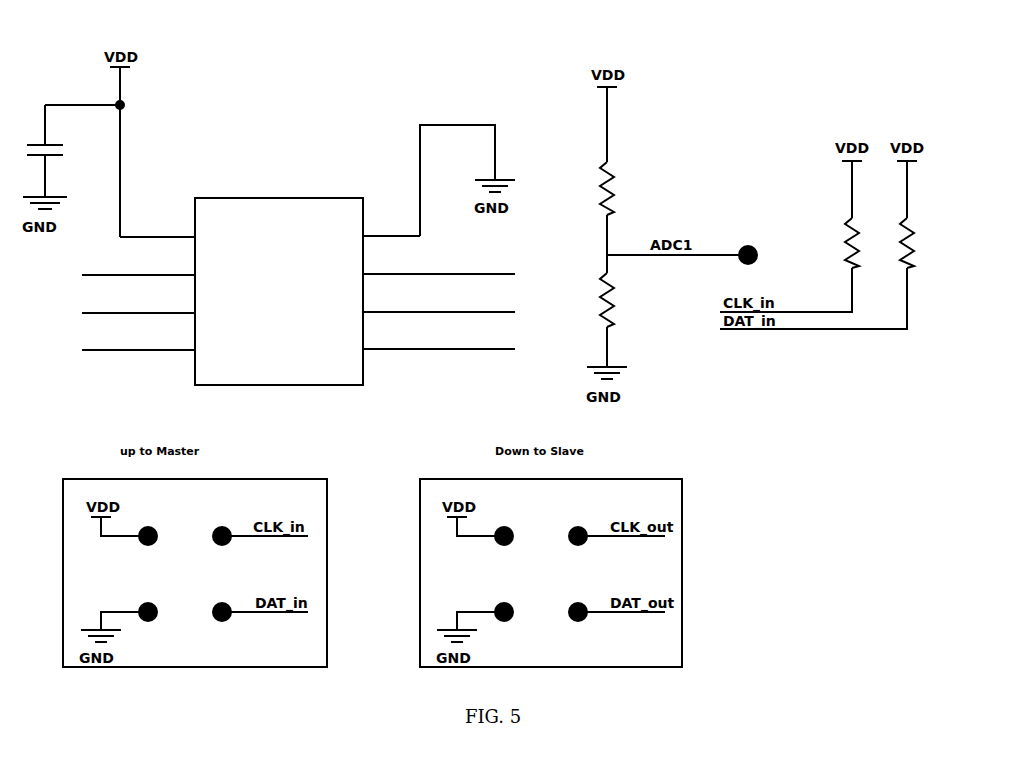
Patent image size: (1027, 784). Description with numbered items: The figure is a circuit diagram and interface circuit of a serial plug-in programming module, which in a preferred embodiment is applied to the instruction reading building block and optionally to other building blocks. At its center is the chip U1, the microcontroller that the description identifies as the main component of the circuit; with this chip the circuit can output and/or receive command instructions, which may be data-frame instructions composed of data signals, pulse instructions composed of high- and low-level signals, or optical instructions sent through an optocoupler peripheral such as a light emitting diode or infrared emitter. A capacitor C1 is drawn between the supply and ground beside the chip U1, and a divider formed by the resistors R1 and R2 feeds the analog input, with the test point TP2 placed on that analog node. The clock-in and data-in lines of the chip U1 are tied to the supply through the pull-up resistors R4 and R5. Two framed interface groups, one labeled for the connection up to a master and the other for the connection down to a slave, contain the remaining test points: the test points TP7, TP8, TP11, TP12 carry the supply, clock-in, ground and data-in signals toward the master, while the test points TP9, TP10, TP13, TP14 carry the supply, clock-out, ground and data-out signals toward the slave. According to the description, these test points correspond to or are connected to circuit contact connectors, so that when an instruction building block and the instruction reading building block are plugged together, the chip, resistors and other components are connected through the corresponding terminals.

The decoupling capacitor 0.1uF/15V C1 is at (76, 151).
The microcontroller MC35P7041 U1 is at (298, 292).
The resistor 10K R1 is at (621, 190).
The resistor R R2 is at (618, 302).
The pull-up resistor 2.2K CLK_in R4 is at (868, 246).
The pull-up resistor 2.2K DAT_in R5 is at (923, 246).
The test point TP2 is at (773, 250).
The test point TP7 is at (152, 523).
The test point TP8 is at (213, 523).
The test point TP9 is at (508, 523).
The test point TP10 is at (572, 523).
The test point TP11 is at (139, 599).
The test point TP12 is at (214, 599).
The test point TP13 is at (494, 599).
The test point TP14 is at (572, 599).